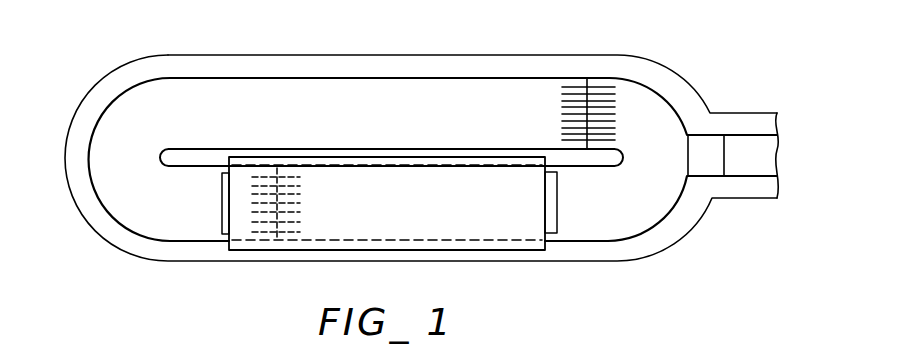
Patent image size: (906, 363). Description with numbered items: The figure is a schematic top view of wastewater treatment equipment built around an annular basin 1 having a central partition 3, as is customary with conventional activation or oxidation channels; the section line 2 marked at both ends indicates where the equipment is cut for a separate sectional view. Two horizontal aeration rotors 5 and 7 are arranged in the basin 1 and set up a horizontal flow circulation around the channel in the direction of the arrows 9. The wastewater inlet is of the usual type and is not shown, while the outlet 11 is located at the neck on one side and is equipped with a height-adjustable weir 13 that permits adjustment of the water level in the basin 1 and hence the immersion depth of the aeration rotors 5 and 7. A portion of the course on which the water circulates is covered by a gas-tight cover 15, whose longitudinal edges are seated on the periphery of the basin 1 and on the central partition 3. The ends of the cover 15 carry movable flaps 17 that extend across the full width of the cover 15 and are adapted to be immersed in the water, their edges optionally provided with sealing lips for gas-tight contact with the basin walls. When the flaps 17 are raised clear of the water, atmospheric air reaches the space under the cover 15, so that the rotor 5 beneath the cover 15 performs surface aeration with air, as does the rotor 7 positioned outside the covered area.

The annular basin 1 is at (234, 63).
The section line 2- 2 is at (62, 203).
The central partition 3 is at (185, 158).
The horizontal aeration rotor 5 is at (266, 235).
The horizontal aeration rotor 7 is at (598, 85).
The arrows 9 is at (154, 205).
The outlet 11 is at (741, 165).
The height-adjustable weir 13 is at (705, 152).
The gas-tight cover 15 is at (506, 226).
The movable flaps 17 is at (222, 212).